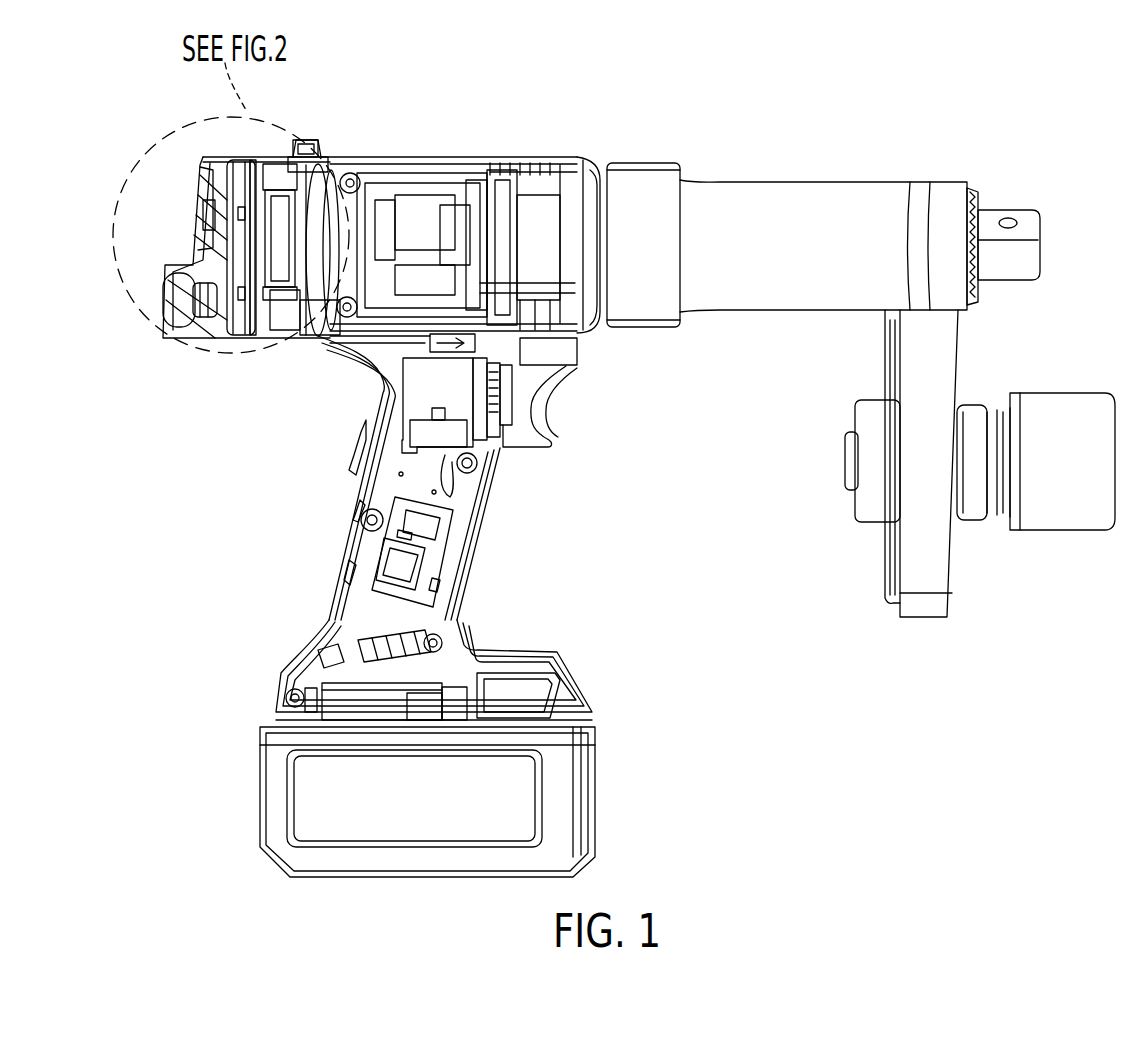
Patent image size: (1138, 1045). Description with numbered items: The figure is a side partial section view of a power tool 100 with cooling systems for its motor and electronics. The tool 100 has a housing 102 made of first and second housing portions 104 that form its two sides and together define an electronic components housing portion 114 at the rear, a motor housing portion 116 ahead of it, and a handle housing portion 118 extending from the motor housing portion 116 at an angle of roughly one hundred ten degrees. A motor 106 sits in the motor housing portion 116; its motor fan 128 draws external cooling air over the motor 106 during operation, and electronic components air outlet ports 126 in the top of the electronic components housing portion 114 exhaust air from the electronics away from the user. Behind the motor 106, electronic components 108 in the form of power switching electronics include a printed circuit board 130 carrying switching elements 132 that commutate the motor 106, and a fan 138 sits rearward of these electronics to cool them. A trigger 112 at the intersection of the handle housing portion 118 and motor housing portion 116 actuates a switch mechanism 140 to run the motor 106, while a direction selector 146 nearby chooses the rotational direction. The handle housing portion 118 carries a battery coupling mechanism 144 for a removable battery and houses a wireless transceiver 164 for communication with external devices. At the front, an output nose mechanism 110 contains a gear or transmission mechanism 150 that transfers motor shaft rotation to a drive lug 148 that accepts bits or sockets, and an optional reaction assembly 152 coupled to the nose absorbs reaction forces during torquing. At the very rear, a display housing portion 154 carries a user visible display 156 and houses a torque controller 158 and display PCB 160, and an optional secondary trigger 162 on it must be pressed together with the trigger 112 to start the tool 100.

The tool 100 is at (126, 104).
The housing 102 is at (512, 140).
The first and second housing portions 104 is at (553, 155).
The motor 106 is at (407, 178).
The electronic components 108 is at (296, 286).
The output nose mechanism 110 is at (859, 158).
The trigger 112 is at (547, 420).
The electronic components housing portion 114 is at (318, 132).
The motor housing portion 116 is at (453, 142).
The handle housing portion 118 is at (345, 468).
The electronic components air outlet ports 126 is at (318, 160).
The motor fan 128 is at (474, 168).
The printed circuit board 130 is at (316, 300).
The switching elements 132 is at (312, 200).
The fan 138 is at (268, 300).
The switch mechanism 140 is at (441, 427).
The battery coupling mechanism 144 is at (283, 700).
The direction selector 146 is at (432, 342).
The drive lug 148 is at (1030, 210).
The gear or transmission mechanism 150 is at (806, 312).
The reaction assembly 152 is at (925, 618).
The display housing portion 154 is at (172, 242).
The user visible display 156 is at (203, 198).
The torque controller 158 is at (248, 172).
The display PCB 160 is at (225, 170).
The secondary trigger 162 is at (160, 300).
The wireless transceiver 164 is at (447, 550).